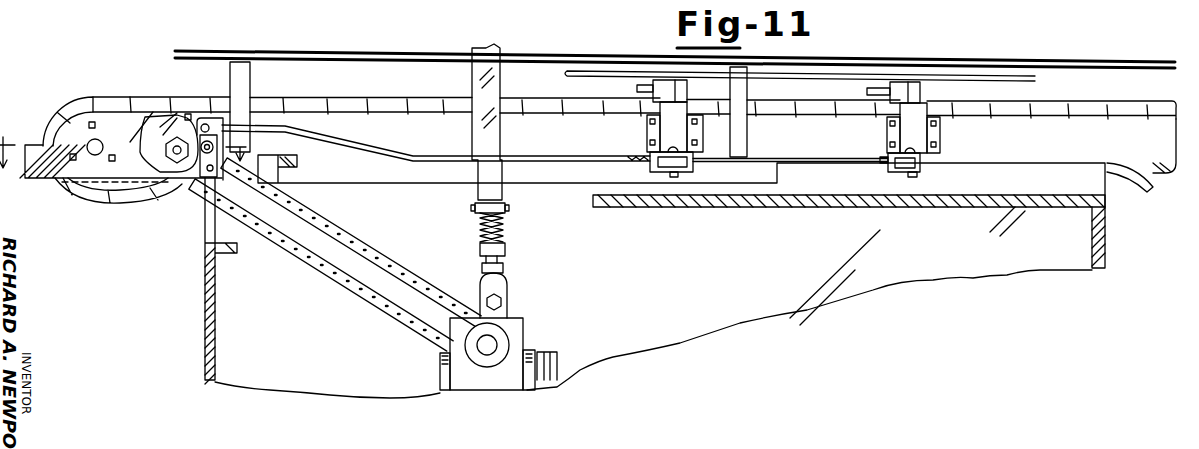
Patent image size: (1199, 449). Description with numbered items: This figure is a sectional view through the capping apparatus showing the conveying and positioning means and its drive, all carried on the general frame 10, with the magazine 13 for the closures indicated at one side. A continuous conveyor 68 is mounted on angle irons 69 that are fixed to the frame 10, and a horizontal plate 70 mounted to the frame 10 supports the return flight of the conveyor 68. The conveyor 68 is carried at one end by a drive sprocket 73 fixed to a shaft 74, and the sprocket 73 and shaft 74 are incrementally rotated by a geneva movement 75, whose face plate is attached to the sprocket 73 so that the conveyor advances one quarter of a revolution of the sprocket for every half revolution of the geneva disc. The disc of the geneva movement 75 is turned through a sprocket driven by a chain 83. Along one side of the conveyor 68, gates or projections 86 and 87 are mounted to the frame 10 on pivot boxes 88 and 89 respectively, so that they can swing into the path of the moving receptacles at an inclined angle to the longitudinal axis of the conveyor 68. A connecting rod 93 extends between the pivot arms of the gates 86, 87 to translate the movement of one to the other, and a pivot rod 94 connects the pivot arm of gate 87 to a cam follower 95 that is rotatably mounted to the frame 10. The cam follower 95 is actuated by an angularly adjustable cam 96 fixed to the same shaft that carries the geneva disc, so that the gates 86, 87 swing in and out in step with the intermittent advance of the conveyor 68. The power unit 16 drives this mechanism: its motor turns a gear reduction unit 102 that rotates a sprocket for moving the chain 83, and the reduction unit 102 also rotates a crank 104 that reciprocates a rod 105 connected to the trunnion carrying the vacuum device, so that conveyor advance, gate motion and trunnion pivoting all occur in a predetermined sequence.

The frame 10 is at (200, 318).
The magazine 13 is at (123, 144).
The power unit 16 is at (439, 354).
The continuous conveyor 68 is at (78, 105).
The angle irons 69 is at (288, 170).
The horizontal plate 70 is at (1115, 167).
The drive sprocket 73 is at (88, 188).
The shaft 74 is at (90, 145).
The geneva movement 75 is at (113, 114).
The chain 83 is at (308, 256).
The gate 86 is at (867, 92).
The gate 87 is at (637, 88).
The pivot box 88 is at (928, 137).
The pivot box 89 is at (660, 132).
The connecting rod 93 is at (810, 163).
The pivot rod 94 is at (516, 157).
The cam follower 95 is at (200, 182).
The angularly adjustable cam 96 is at (150, 140).
The gear reduction unit 102 is at (512, 333).
The crank 104 is at (500, 311).
The rod 105 is at (500, 207).